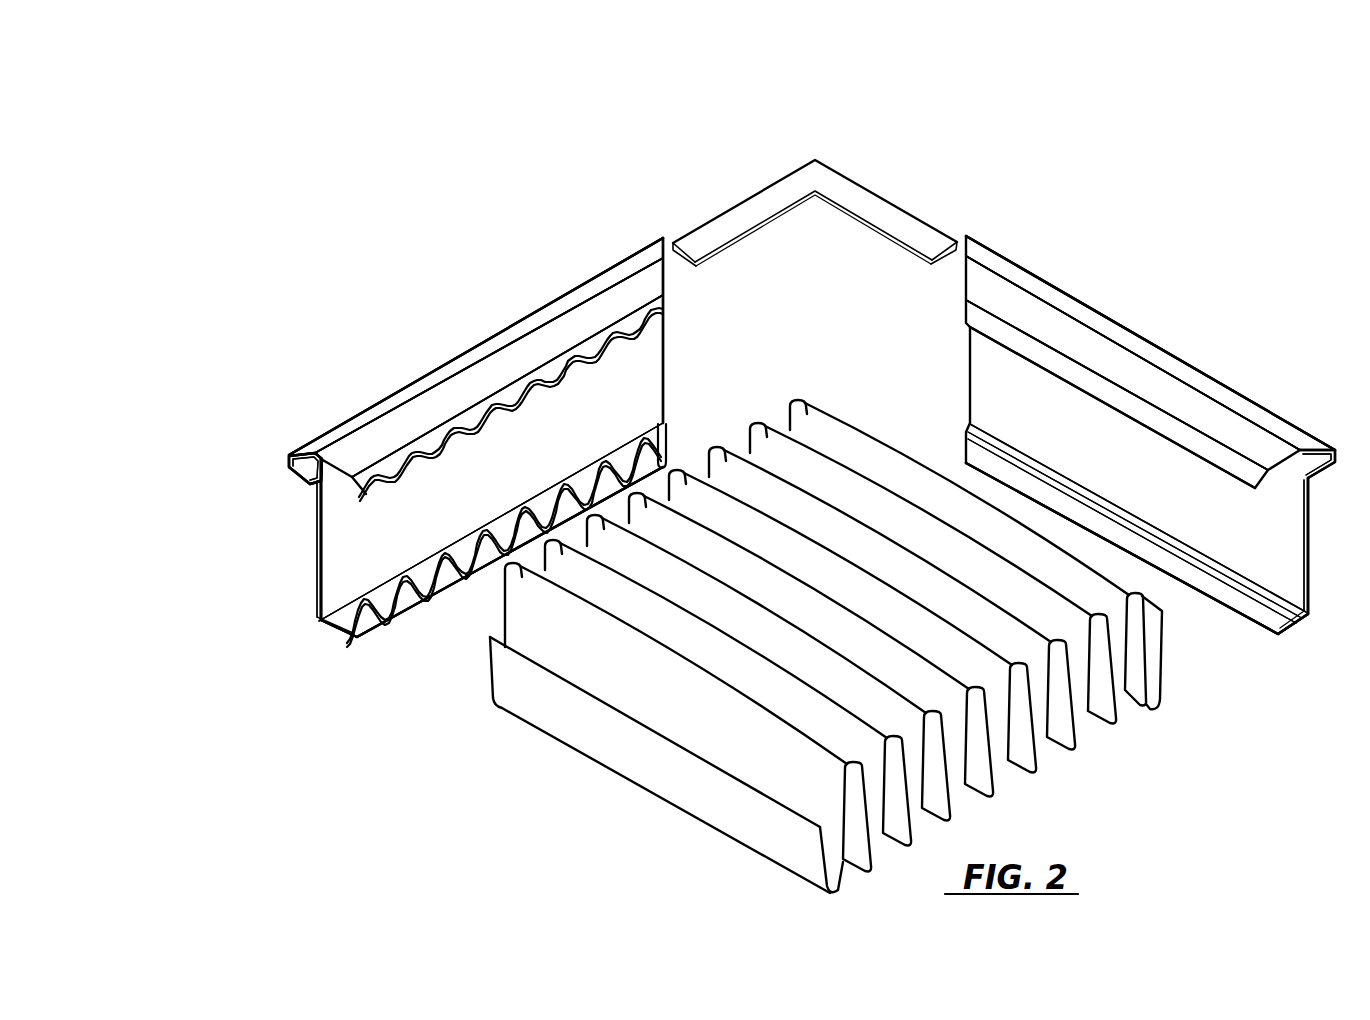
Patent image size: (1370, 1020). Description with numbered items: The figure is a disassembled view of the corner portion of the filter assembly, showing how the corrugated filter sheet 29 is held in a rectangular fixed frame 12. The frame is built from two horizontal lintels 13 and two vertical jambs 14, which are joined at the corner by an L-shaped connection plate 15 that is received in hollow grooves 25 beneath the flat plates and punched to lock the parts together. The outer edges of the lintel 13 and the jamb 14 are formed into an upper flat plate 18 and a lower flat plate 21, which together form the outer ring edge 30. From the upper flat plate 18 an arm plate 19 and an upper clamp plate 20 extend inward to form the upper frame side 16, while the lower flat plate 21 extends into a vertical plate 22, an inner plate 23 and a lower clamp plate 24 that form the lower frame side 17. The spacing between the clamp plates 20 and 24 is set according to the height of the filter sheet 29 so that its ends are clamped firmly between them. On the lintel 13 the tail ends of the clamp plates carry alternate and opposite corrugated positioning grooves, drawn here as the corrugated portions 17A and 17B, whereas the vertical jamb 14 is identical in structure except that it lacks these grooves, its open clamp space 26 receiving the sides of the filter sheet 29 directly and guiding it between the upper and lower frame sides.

The fixed frame 12 is at (721, 141).
The horizontal lintel 13 is at (468, 377).
The vertical jamb 14 is at (1093, 333).
The L-shaped connection plate 15 is at (842, 190).
The upper frame side 16 is at (543, 290).
The lower frame side 17 is at (322, 638).
The upper corrugated strip 17A is at (437, 448).
The lower corrugated strip 17B is at (468, 560).
The upper flat plate 18 is at (352, 428).
The arm plate 19 is at (395, 435).
The upper clamp plate 20 is at (418, 455).
The lower flat plate 21 is at (300, 480).
The vertical plate 22 is at (310, 552).
The inner plate 23 is at (338, 638).
The lower clamp plate 24 is at (568, 497).
The hollow groove 25 is at (312, 472).
The open clamp space 26 is at (381, 539).
The filter sheet 29 is at (770, 838).
The outer ring edge 30 is at (287, 457).